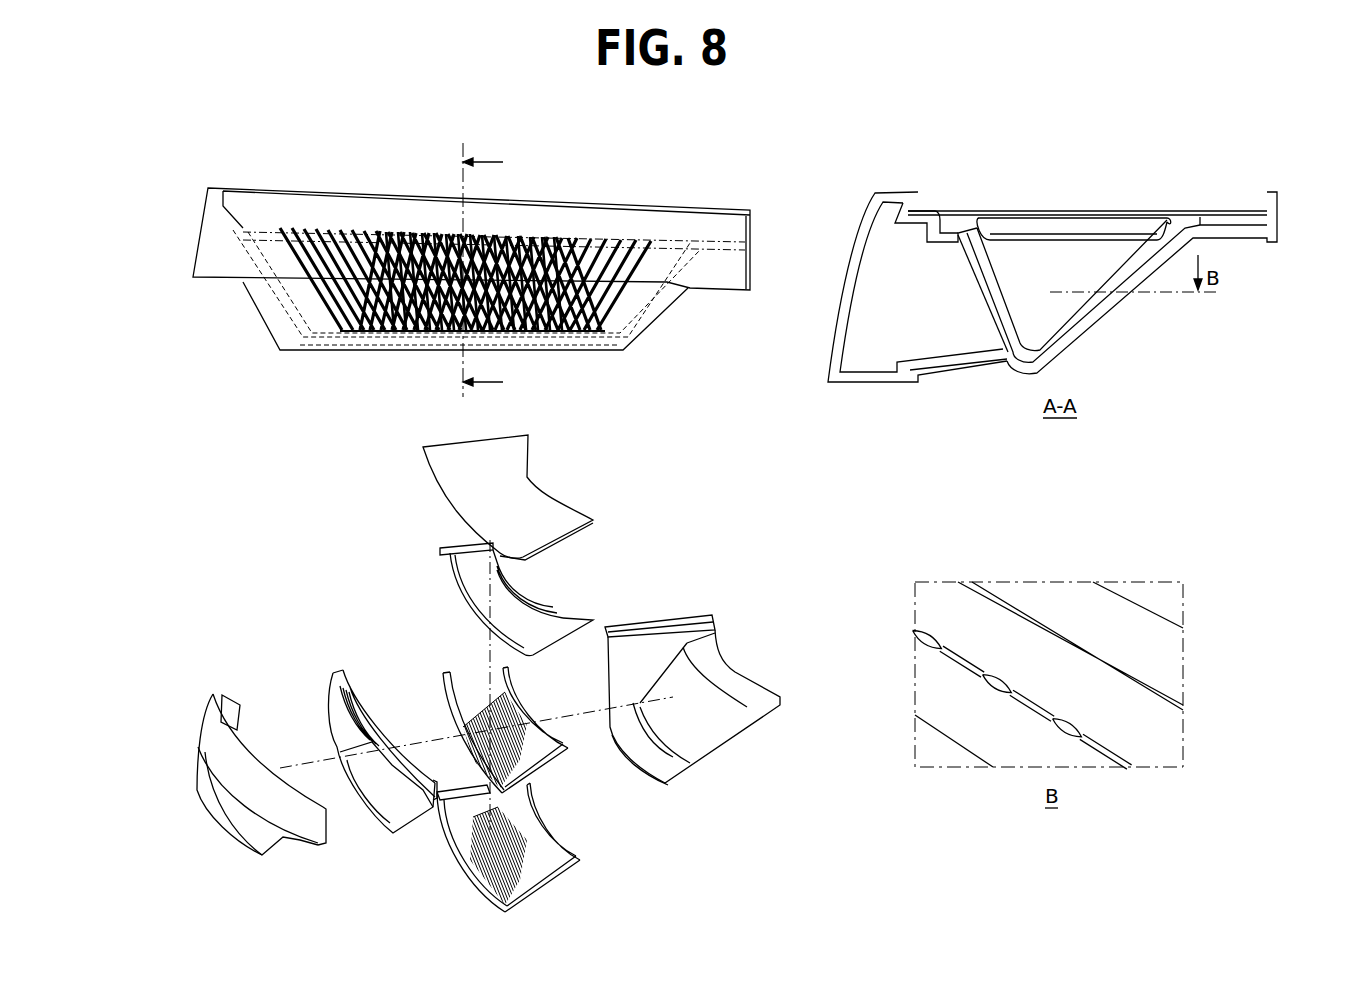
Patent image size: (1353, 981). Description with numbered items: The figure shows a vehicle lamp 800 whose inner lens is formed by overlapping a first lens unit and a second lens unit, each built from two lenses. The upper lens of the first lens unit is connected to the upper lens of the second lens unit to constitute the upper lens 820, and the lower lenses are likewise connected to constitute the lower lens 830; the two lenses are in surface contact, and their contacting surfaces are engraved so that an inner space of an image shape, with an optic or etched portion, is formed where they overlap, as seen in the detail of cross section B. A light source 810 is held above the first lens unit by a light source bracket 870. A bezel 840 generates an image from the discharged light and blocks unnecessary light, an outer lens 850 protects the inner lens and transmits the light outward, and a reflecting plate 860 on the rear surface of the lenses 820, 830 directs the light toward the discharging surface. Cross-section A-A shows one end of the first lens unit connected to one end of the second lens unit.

The lamp 800 is at (248, 141).
The light source 810 is at (563, 500).
The upper lens 820 is at (560, 760).
The lower lens 830 is at (547, 880).
The bezel 840 is at (343, 678).
The outer lens 850 is at (232, 700).
The reflecting plate 860 is at (690, 613).
The light source bracket 870 is at (573, 605).